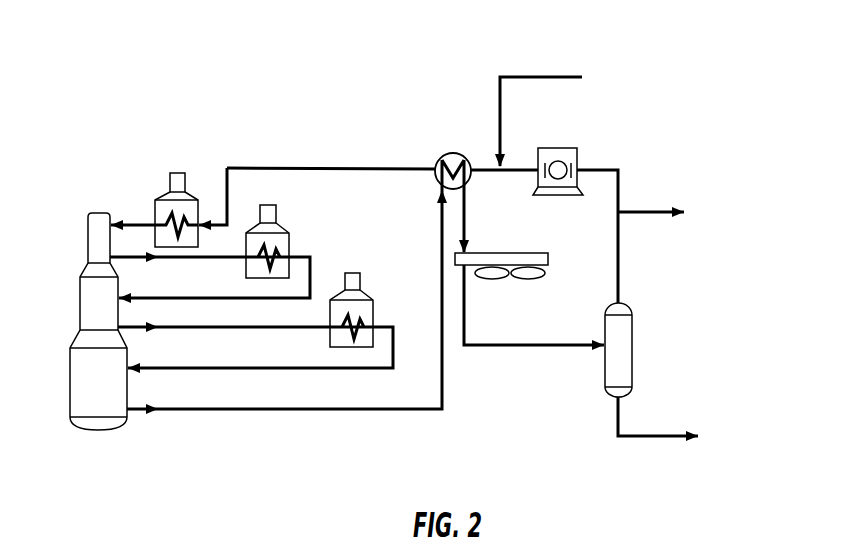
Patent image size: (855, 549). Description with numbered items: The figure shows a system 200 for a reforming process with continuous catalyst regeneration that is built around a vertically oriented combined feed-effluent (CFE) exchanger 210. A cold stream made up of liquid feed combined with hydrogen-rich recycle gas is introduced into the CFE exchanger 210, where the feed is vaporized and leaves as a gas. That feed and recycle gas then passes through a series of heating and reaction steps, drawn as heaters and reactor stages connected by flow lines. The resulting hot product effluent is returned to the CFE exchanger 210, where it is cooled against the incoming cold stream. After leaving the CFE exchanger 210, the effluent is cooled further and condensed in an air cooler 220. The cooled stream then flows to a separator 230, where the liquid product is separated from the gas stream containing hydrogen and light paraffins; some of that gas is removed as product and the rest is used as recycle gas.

The system 200 is at (255, 54).
The combined feed-effluent (CFE) exchanger 210 is at (472, 146).
The air cooler 220 is at (562, 250).
The separator 230 is at (717, 385).